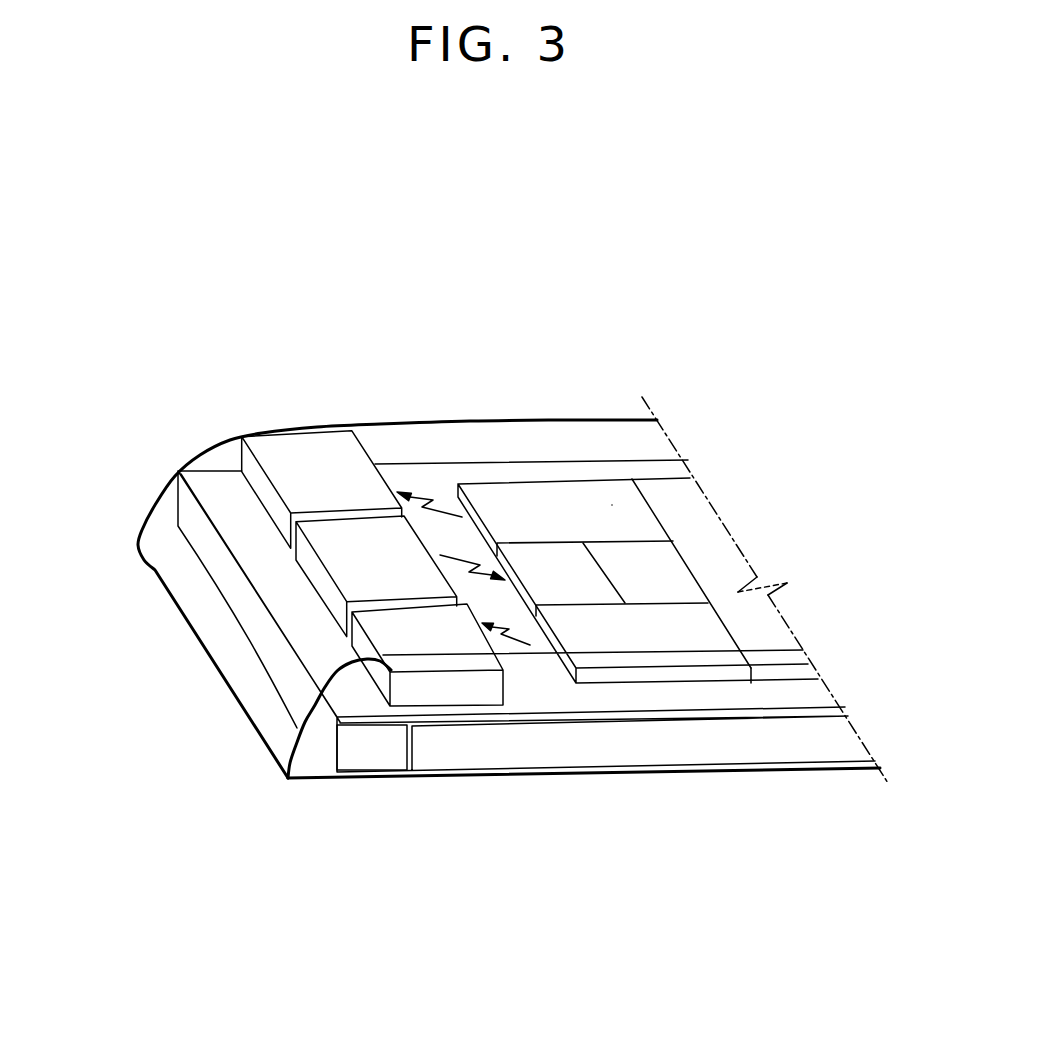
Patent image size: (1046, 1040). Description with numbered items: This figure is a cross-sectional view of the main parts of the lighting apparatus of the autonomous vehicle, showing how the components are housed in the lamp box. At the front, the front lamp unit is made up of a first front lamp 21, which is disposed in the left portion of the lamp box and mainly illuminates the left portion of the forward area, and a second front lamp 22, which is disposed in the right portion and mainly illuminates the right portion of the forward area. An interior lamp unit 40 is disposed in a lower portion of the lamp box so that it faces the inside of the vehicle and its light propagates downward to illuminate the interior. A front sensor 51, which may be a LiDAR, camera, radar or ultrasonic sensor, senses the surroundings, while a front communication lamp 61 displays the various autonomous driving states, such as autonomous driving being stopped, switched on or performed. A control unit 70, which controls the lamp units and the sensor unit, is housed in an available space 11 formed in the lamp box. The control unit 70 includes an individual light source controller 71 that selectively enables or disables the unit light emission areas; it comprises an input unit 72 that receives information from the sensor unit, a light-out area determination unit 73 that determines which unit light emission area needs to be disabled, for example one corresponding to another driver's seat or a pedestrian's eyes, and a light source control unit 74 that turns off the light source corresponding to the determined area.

The available space 11 is at (728, 695).
The first front lamp 21 is at (442, 683).
The second front lamp 22 is at (317, 450).
The interior lamp unit 40 is at (633, 763).
The front sensor 51 is at (357, 548).
The front communication lamp 61 is at (375, 751).
The control unit 70 is at (776, 670).
The individual light source controller 71 is at (585, 318).
The input unit 72 is at (549, 572).
The light-out area determination unit 73 is at (625, 560).
The light source control unit 74 is at (687, 637).